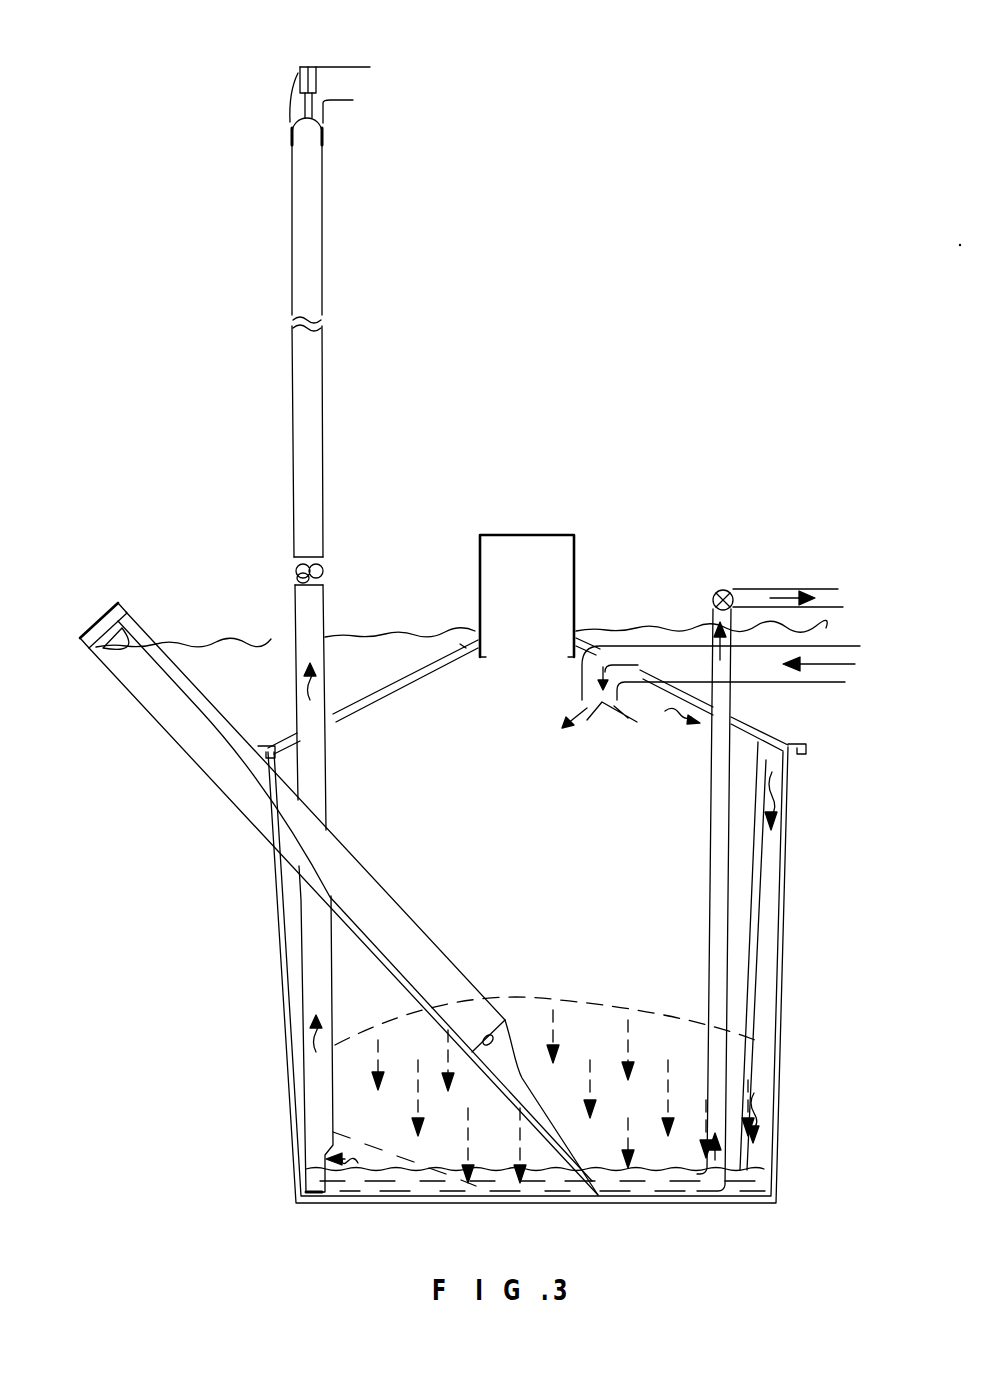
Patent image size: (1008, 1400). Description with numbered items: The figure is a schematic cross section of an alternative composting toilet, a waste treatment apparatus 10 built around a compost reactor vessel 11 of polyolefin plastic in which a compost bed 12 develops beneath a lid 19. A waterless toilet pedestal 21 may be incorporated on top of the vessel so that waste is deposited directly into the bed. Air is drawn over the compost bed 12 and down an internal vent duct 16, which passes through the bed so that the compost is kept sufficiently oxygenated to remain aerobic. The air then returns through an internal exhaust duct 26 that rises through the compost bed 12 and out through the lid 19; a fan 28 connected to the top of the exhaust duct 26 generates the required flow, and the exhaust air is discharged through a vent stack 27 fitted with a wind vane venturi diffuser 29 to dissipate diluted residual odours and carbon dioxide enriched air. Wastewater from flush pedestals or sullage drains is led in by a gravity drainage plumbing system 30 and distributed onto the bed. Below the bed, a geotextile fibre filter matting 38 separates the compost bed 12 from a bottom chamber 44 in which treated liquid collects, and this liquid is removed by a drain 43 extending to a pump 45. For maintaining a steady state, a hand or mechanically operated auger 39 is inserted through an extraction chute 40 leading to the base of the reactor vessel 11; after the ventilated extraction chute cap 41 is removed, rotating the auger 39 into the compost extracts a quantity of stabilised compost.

The waste treatment apparatus 10 is at (590, 265).
The compost reactor vessel 11 is at (284, 1000).
The compost bed 12 is at (672, 1065).
The internal vent duct 16 is at (768, 843).
The lid 19 is at (414, 672).
The waterless toilet pedestal 21 is at (580, 590).
The internal exhaust duct 26 is at (312, 904).
The vent stack 27 is at (322, 340).
The fan 28 is at (325, 565).
The wind vane venturi diffuser 29 is at (322, 67).
The gravity drainage plumbing system 30 is at (602, 705).
The geotextile fibre filter matting 38 is at (778, 1151).
The auger 39 is at (170, 708).
The extraction chute 40 is at (133, 698).
The ventilated extraction chute cap 41 is at (99, 620).
The drain 43 is at (718, 885).
The bottom chamber 44 is at (355, 1165).
The pump 45 is at (734, 592).